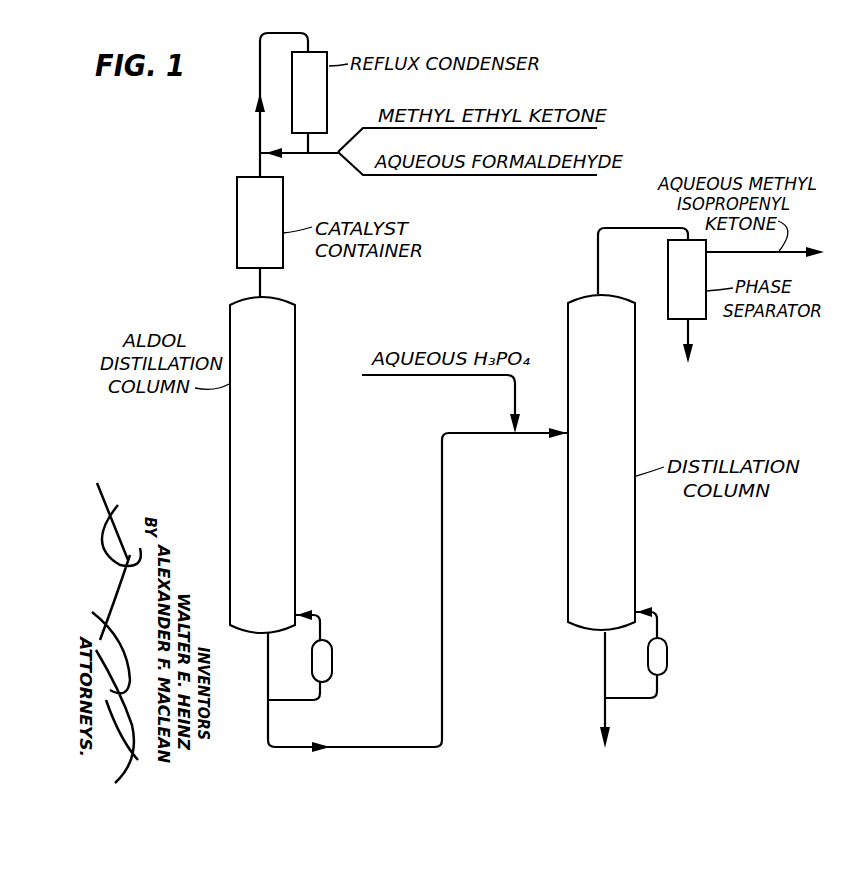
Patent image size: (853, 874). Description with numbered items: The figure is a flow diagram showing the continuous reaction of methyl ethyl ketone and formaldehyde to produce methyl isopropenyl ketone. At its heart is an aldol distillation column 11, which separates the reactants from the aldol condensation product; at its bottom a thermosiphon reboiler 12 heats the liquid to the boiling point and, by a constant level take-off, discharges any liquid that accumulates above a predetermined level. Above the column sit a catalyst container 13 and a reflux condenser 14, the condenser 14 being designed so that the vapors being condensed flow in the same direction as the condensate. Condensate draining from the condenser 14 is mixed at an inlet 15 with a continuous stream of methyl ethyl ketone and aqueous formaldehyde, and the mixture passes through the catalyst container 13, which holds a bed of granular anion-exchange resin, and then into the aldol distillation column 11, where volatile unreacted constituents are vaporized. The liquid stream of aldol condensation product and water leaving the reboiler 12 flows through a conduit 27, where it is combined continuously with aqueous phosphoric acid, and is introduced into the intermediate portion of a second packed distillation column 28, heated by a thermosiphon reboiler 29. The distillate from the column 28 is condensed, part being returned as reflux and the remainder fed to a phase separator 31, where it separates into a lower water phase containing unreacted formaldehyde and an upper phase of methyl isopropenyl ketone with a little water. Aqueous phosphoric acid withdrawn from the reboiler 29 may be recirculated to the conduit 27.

The aldol distillation column 11 is at (289, 428).
The thermosiphon reboiler 12 is at (263, 657).
The catalyst container 13 is at (237, 246).
The reflux condenser 14 is at (322, 94).
The inlet 15 is at (311, 156).
The conduit 27 is at (272, 727).
The second packed distillation column 28 is at (632, 548).
The thermosiphon reboiler 29 is at (586, 655).
The phase separator 31 is at (668, 263).